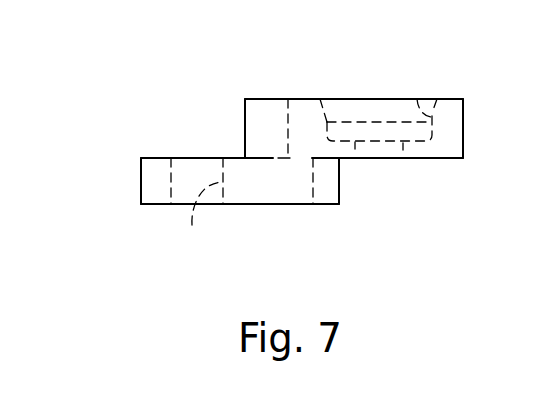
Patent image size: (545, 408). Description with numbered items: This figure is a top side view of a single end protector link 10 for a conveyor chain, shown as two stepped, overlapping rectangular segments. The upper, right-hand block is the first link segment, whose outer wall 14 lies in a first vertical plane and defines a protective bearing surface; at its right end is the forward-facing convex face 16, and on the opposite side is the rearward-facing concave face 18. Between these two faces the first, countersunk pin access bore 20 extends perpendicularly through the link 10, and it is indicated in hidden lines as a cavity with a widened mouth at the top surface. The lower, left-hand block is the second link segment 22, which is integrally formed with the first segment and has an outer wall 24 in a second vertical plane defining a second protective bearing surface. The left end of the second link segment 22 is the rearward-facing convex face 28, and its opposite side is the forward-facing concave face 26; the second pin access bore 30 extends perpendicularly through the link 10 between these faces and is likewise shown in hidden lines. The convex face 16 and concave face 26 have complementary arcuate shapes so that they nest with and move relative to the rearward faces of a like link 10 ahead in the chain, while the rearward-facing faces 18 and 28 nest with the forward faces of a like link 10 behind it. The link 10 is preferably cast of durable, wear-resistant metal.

The end protector link 10 is at (101, 170).
The outer wall 14 is at (305, 107).
The forward-facing convex face 16 is at (463, 132).
The rearward-facing concave face 18 is at (245, 132).
The first pin access bore 20 is at (417, 99).
The second link segment 22 is at (155, 205).
The outer wall 24 is at (153, 158).
The forward-facing concave face 26 is at (339, 185).
The rearward-facing convex face 28 is at (140, 176).
The second pin access bore 30 is at (192, 225).